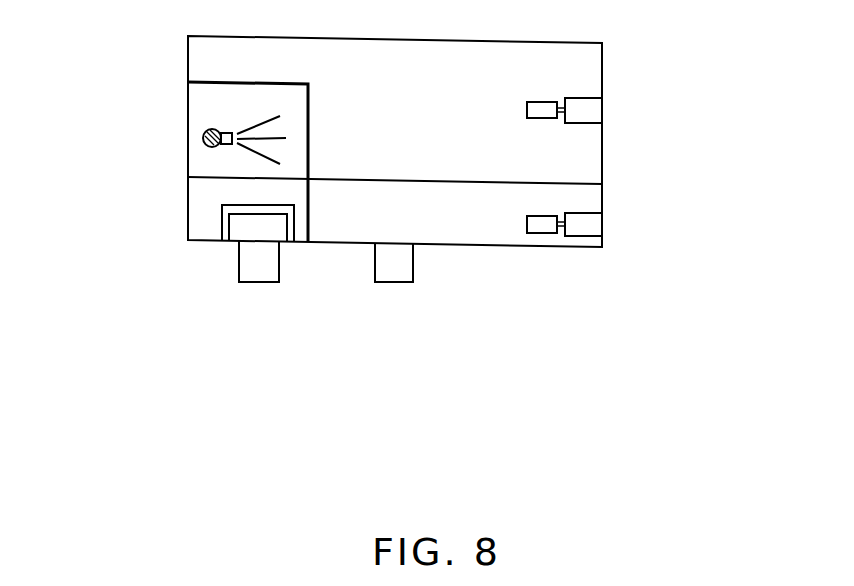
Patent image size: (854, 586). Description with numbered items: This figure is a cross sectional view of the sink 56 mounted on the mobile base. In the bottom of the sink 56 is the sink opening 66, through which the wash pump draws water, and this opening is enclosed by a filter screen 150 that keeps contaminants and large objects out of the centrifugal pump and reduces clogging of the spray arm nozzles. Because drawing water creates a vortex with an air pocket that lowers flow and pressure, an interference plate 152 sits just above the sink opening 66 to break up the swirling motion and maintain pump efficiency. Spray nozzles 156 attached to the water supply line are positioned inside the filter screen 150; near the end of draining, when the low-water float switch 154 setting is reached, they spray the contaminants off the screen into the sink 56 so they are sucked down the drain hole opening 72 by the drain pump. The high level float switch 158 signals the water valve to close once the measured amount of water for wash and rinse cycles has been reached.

The sink 56 is at (556, 247).
The filter screen 150 is at (198, 81).
The spray nozzles 156 is at (204, 144).
The interference plate 152 is at (223, 242).
The sink opening 66 is at (263, 284).
The drain hole opening 72 is at (412, 285).
The high level float switch 158 is at (604, 113).
The float switch 154 is at (604, 230).